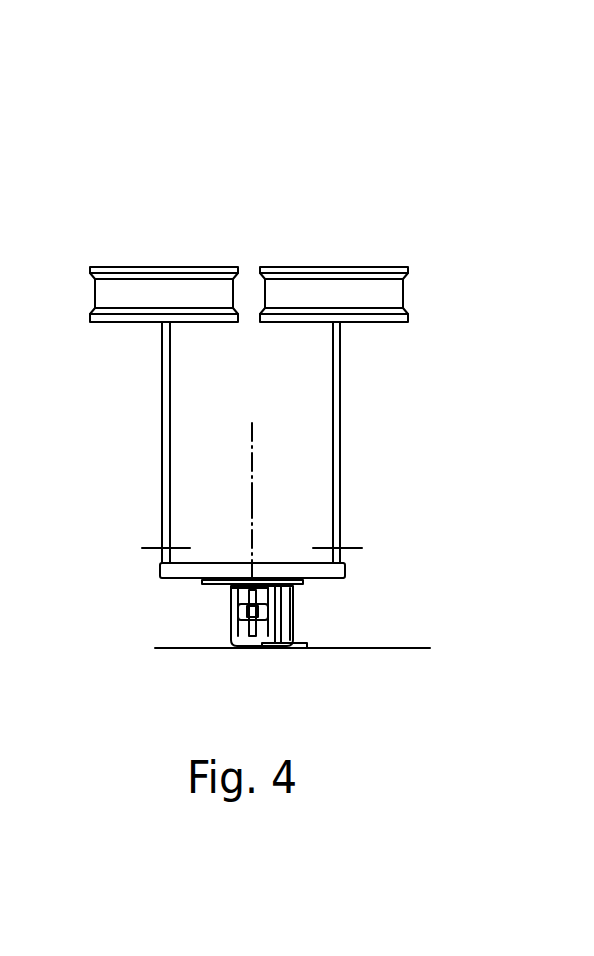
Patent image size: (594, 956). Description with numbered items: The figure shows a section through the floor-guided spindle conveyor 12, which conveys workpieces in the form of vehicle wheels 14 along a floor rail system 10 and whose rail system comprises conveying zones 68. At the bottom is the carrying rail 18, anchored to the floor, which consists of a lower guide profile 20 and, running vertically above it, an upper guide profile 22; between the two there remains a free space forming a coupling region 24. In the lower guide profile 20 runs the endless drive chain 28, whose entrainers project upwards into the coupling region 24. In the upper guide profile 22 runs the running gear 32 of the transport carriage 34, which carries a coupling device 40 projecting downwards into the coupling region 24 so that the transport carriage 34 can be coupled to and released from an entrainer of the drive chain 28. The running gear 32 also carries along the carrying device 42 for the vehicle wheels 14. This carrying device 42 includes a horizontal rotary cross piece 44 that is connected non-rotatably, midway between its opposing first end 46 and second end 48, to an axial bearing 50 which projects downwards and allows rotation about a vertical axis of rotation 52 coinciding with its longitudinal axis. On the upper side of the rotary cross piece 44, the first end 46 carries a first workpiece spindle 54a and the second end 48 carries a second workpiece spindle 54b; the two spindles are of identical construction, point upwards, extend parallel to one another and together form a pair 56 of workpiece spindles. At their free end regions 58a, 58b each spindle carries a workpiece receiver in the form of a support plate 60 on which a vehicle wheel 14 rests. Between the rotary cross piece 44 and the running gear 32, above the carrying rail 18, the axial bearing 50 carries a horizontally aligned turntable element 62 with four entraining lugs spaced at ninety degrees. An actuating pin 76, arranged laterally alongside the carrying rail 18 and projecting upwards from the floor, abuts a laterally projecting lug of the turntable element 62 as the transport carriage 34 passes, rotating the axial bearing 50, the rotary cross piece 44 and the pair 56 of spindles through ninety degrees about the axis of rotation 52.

The floor rail system 10 is at (95, 128).
The spindle conveyor 12 is at (125, 763).
The vehicle wheel 14 is at (117, 277).
The carrying rail 18 is at (240, 650).
The lower guide profile 20 is at (185, 621).
The upper guide profile 22 is at (232, 590).
The coupling region 24 is at (278, 611).
The endless drive chain 28 is at (252, 650).
The running gear 32 is at (296, 580).
The transport carriage 34 is at (120, 462).
The coupling device 40 is at (233, 618).
The carrying device 42 is at (135, 553).
The rotary cross piece 44 is at (278, 560).
The first end 46 is at (160, 573).
The second end 48 is at (347, 568).
The axial bearing 50 is at (245, 586).
The axis of rotation 52 is at (255, 427).
The first workpiece spindle 54a is at (168, 382).
The second workpiece spindle 54b is at (340, 373).
The pair of workpiece spindles 56 is at (366, 420).
The free end region 58a is at (167, 340).
The free end region 58b is at (340, 327).
The support plate 60 is at (180, 315).
The turntable element 62 is at (285, 585).
The conveying zone 68 is at (495, 183).
The actuating pin 76 is at (287, 633).